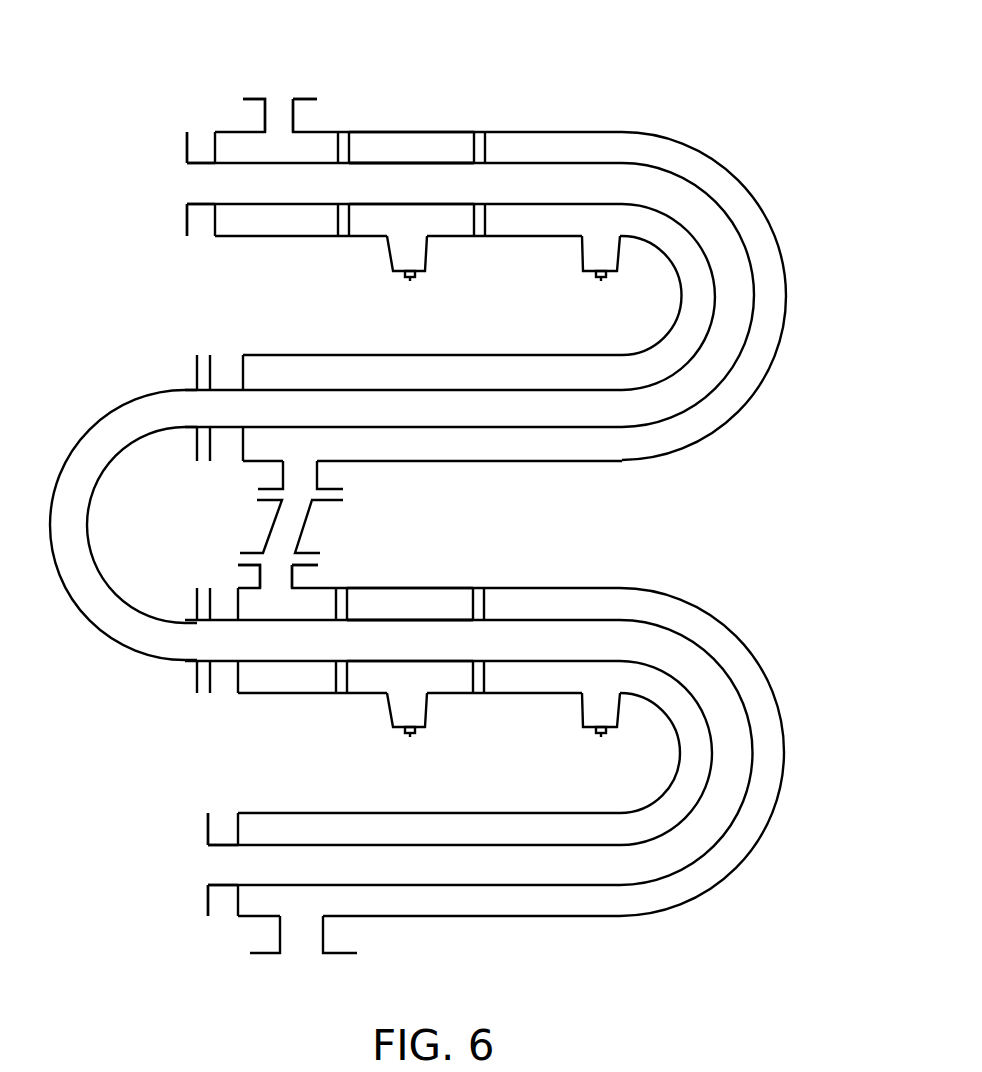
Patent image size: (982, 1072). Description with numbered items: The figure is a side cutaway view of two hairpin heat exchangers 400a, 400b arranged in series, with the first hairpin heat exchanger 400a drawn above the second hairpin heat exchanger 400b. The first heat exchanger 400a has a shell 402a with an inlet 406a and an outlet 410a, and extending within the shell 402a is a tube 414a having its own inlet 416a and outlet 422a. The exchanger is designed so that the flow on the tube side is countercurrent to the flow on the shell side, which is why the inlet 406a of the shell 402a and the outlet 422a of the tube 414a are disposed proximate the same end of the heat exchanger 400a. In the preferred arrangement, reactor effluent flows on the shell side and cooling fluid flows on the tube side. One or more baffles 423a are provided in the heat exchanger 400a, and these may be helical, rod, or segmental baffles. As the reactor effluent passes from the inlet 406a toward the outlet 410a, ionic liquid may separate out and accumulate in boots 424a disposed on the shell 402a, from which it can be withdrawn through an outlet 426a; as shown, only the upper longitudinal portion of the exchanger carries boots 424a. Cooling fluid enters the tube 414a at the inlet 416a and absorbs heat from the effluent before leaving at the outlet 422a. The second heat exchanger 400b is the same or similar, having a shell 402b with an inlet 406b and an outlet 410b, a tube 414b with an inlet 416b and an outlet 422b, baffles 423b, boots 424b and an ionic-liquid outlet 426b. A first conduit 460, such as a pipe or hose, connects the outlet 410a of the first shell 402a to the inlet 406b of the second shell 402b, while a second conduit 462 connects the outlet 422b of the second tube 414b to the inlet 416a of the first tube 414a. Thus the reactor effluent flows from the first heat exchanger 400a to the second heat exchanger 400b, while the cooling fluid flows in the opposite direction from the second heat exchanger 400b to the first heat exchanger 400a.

The first hairpin heat exchanger 400a is at (757, 137).
The shell 402a is at (413, 132).
The inlet 406a is at (278, 103).
The outlet 410a is at (307, 483).
The tube 414a is at (432, 178).
The inlet 416a is at (233, 408).
The outlet 422a is at (193, 183).
The baffles 423a is at (347, 132).
The boots 424a is at (427, 250).
The outlet 426a is at (410, 281).
The second hairpin heat exchanger 400b is at (756, 594).
The shell 402b is at (627, 586).
The inlet 406b is at (283, 577).
The outlet 410b is at (307, 953).
The tube 414b is at (543, 643).
The inlet 416b is at (228, 875).
The outlet 422b is at (213, 640).
The baffles 423b is at (343, 690).
The boots 424b is at (428, 715).
The outlet 426b is at (409, 737).
The first conduit 460 is at (305, 527).
The second conduit 462 is at (87, 523).